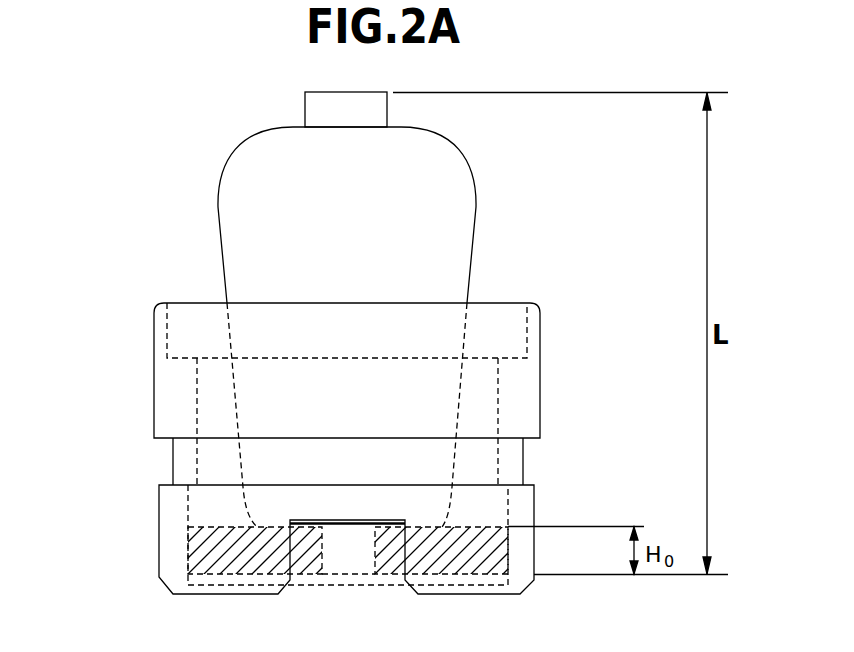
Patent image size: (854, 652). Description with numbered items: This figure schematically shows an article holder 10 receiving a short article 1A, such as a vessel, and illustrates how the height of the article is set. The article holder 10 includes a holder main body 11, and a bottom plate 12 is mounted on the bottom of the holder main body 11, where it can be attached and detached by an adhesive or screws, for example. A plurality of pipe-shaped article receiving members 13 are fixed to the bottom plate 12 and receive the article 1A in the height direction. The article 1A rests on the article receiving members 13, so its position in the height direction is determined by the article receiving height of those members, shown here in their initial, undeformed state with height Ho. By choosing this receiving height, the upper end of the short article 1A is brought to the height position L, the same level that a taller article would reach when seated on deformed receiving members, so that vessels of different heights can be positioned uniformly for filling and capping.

The article 1A is at (218, 222).
The article holder 10 is at (143, 343).
The holder main body 11 is at (143, 412).
The bottom plate 12 is at (172, 583).
The article receiving member 13 is at (205, 549).